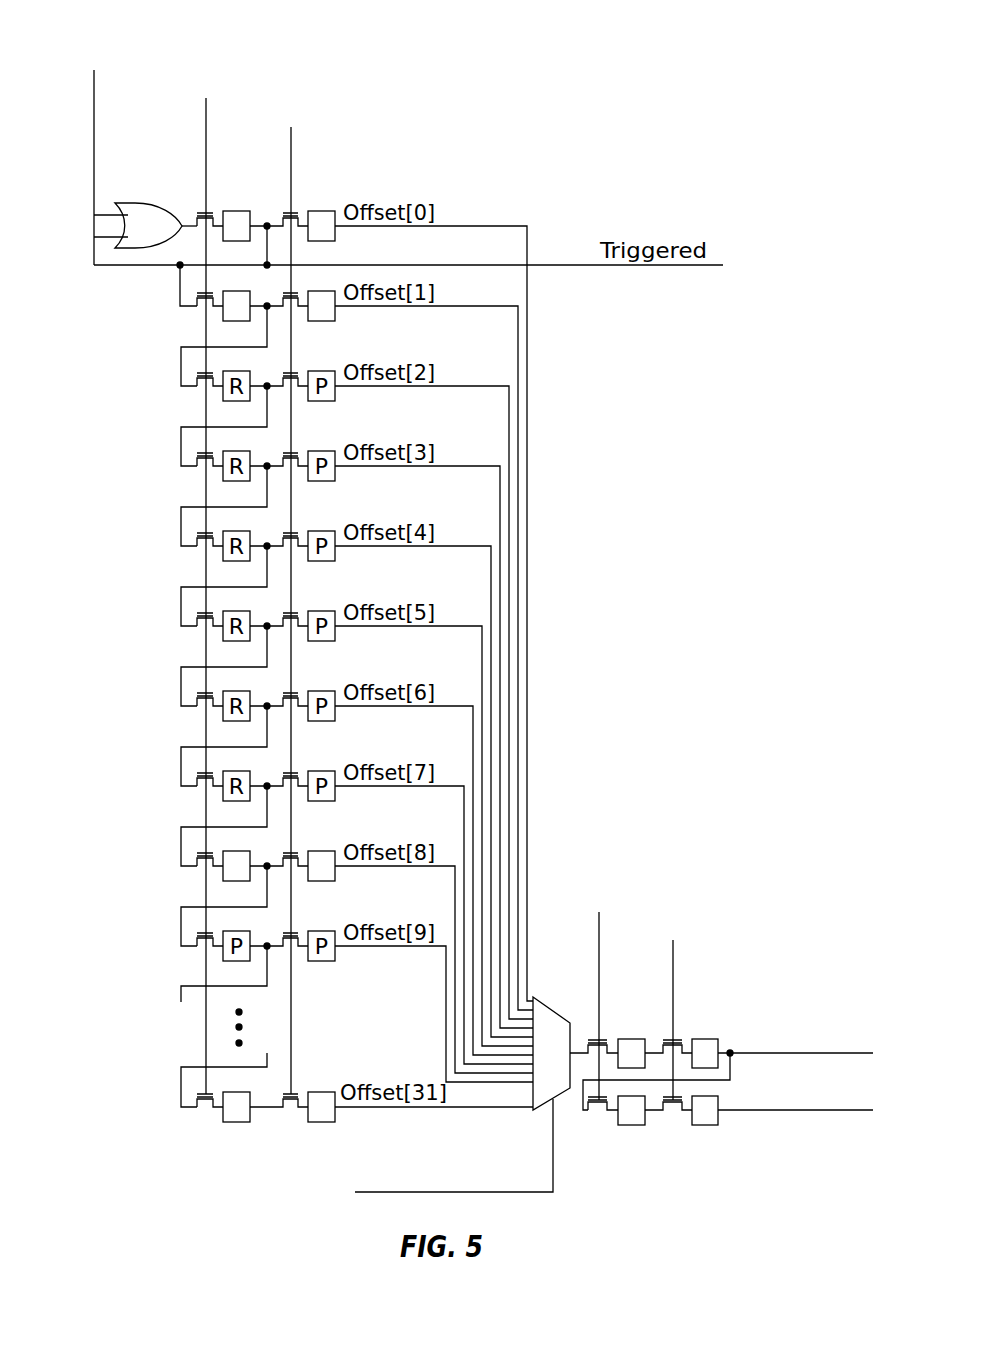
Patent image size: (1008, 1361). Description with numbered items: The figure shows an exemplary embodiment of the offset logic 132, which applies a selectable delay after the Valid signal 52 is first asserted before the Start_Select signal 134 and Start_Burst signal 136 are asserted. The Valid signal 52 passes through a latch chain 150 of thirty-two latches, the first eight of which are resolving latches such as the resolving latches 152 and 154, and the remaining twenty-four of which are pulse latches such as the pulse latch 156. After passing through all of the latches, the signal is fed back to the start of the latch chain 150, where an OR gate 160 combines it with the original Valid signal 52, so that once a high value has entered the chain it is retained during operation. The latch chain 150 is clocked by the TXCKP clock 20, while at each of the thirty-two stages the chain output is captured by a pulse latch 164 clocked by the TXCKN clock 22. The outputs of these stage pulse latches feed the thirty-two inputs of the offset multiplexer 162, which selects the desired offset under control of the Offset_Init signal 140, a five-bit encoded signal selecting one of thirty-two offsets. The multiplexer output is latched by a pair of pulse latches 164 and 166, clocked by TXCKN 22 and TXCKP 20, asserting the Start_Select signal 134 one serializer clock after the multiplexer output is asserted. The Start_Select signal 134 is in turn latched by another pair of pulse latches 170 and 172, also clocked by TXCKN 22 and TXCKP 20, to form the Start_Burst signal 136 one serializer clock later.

The Valid[0] signal 52 is at (94, 118).
The TXCKP clock 20 is at (206, 140).
The TXCKN clock 22 is at (291, 136).
The OR gate 160 is at (135, 203).
The resolving latch 152 is at (237, 211).
The pulse latch 164 is at (319, 211).
The resolving latch 154 is at (237, 293).
The pulse latch 156 is at (237, 853).
The latch chain 150 is at (240, 1147).
The offset logic 132 is at (523, 165).
The offset multiplexer 162 is at (548, 1005).
The pulse latch 166 is at (705, 1039).
The Start_Select signal 134 is at (812, 1055).
The Start_Burst signal 136 is at (812, 1112).
The pulse latch 170 is at (631, 1125).
The pulse latch 172 is at (705, 1125).
The Offset_Init[4:0] signal 140 is at (512, 1193).